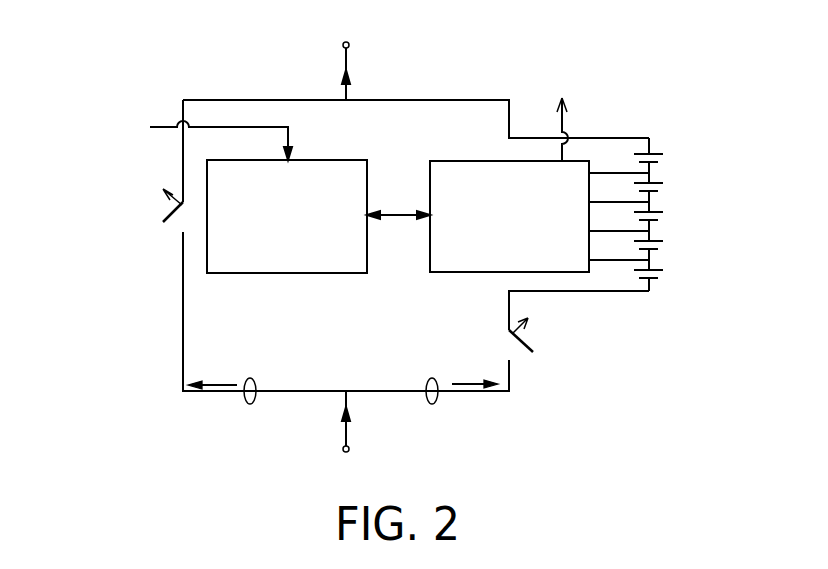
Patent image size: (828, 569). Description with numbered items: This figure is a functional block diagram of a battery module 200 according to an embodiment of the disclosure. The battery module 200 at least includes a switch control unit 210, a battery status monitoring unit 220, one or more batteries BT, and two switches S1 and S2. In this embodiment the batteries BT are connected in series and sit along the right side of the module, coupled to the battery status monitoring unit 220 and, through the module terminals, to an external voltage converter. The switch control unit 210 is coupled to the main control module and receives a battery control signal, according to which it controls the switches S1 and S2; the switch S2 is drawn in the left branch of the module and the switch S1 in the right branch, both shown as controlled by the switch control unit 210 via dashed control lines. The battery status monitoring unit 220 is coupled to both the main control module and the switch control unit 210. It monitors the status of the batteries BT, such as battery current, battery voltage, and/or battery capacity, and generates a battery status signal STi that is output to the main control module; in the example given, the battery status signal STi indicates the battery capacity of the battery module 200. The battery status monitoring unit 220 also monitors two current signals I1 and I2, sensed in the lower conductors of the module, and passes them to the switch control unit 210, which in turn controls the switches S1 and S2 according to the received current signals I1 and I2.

The battery module 200 is at (490, 45).
The switch control unit 210 is at (270, 257).
The battery status monitoring unit 220 is at (548, 256).
The batteries BT is at (639, 214).
The switch S1 is at (288, 273).
The switch S2 is at (207, 218).
The current signal I1 is at (458, 276).
The current signal I2 is at (431, 276).
The battery status signal STi is at (562, 116).